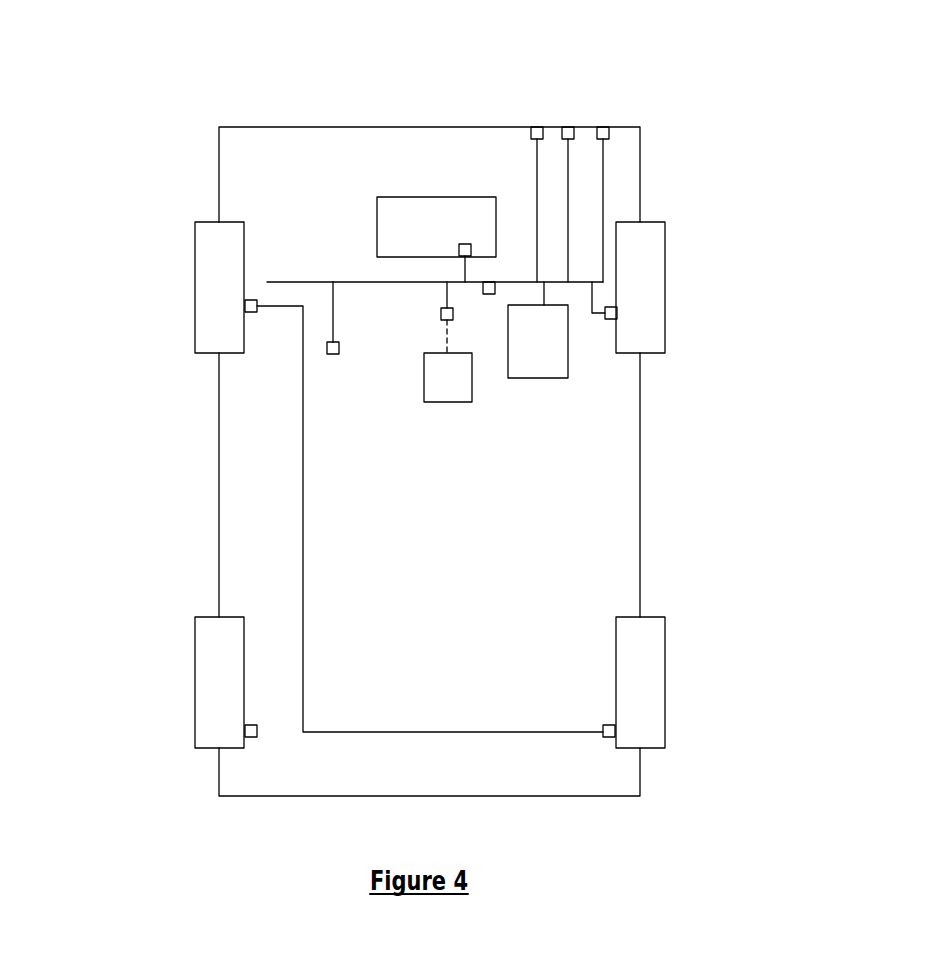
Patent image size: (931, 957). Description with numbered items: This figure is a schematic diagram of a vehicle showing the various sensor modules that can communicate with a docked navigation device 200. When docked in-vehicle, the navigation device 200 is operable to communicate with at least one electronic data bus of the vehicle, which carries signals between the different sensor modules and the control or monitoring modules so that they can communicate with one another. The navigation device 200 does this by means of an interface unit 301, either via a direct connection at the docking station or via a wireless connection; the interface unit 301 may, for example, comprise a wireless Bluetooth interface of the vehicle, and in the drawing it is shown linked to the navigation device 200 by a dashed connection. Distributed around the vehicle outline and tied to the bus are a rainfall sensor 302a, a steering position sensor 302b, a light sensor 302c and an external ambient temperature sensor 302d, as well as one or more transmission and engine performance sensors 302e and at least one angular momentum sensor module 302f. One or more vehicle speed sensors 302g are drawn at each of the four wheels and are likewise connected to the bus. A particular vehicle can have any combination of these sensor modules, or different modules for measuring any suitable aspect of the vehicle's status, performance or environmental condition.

The navigation device 200 is at (468, 369).
The interface unit 301 is at (440, 312).
The rainfall sensor 302a is at (537, 127).
The steering position sensor 302b is at (333, 354).
The light sensor 302c is at (568, 127).
The external ambient temperature sensor 302d is at (603, 127).
The transmission and engine performance sensors 302e is at (460, 242).
The angular momentum sensor module 302f is at (488, 281).
The vehicle speed sensors 302g is at (262, 267).